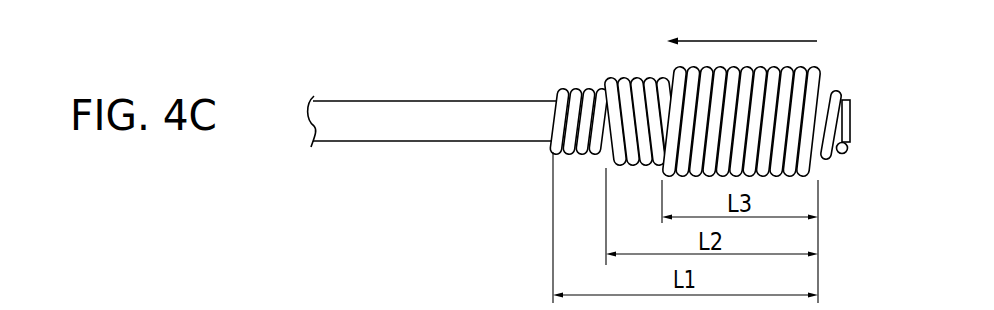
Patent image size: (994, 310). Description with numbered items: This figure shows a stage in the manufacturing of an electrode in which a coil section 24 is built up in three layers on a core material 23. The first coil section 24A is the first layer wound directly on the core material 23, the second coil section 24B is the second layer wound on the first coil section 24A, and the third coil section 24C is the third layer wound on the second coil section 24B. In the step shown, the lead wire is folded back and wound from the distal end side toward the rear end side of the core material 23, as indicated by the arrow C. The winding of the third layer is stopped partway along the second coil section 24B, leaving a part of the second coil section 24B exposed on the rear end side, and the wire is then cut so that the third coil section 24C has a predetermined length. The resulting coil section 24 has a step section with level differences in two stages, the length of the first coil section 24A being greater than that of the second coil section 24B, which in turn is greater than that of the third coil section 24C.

The core material 23 is at (423, 105).
The coil section 24 is at (689, 92).
The first coil section 24A is at (590, 94).
The second coil section 24B is at (638, 82).
The third coil section 24C is at (796, 71).
The arrow C is at (757, 40).